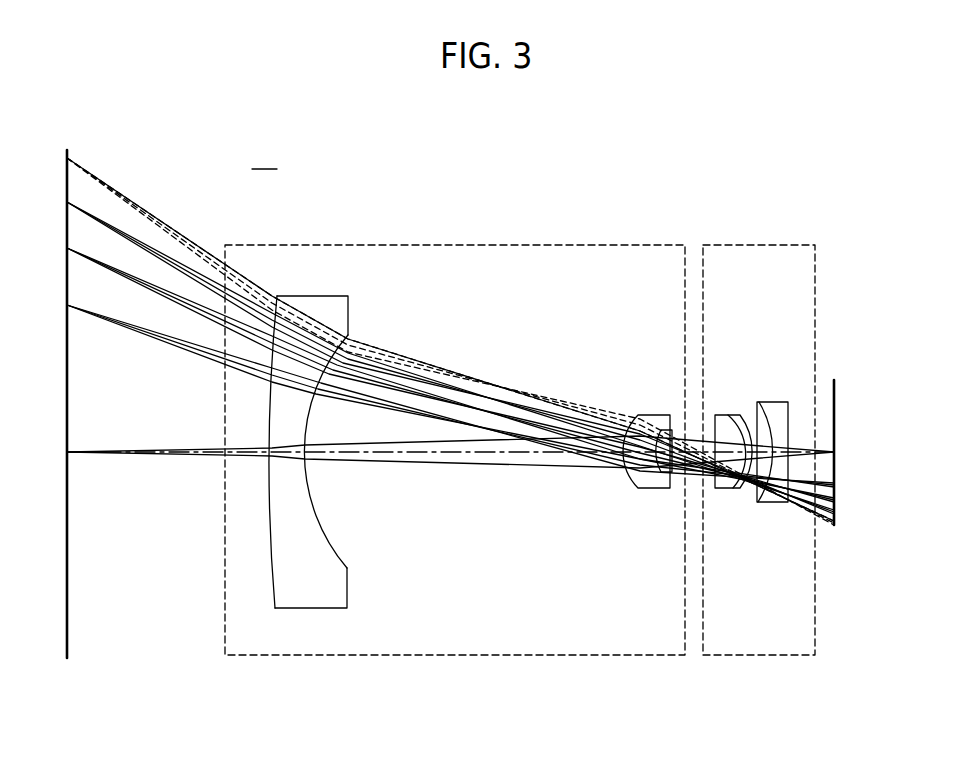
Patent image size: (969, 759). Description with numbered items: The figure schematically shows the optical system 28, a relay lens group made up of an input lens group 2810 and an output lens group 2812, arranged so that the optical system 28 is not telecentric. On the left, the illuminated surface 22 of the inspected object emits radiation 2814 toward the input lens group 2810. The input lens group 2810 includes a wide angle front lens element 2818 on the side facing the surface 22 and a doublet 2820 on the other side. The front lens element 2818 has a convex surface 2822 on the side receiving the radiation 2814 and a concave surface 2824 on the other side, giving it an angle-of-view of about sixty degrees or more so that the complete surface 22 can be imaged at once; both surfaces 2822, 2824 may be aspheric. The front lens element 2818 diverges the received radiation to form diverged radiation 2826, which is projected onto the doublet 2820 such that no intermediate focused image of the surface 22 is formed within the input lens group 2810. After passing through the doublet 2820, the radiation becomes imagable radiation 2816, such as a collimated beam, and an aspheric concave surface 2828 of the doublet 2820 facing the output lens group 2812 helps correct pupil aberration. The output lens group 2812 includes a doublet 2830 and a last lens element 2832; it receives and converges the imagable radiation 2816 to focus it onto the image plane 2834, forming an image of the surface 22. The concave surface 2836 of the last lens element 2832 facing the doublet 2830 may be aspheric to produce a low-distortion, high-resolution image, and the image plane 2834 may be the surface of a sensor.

The surface 22 is at (67, 638).
The optical system 28 is at (264, 156).
The input lens group 2810 is at (300, 655).
The output lens group 2812 is at (743, 657).
The radiation 2814 is at (103, 453).
The imagable radiation 2816 is at (695, 440).
The wide angle front lens element 2818 is at (348, 597).
The doublet 2820 is at (650, 415).
The convex surface 2822 is at (268, 562).
The concave surface 2824 is at (320, 523).
The diverged radiation 2826 is at (512, 457).
The concave surface 2828 is at (673, 488).
The doublet 2830 is at (727, 490).
The last lens element 2832 is at (778, 503).
The image plane 2834 is at (833, 397).
The concave surface 2836 is at (760, 423).